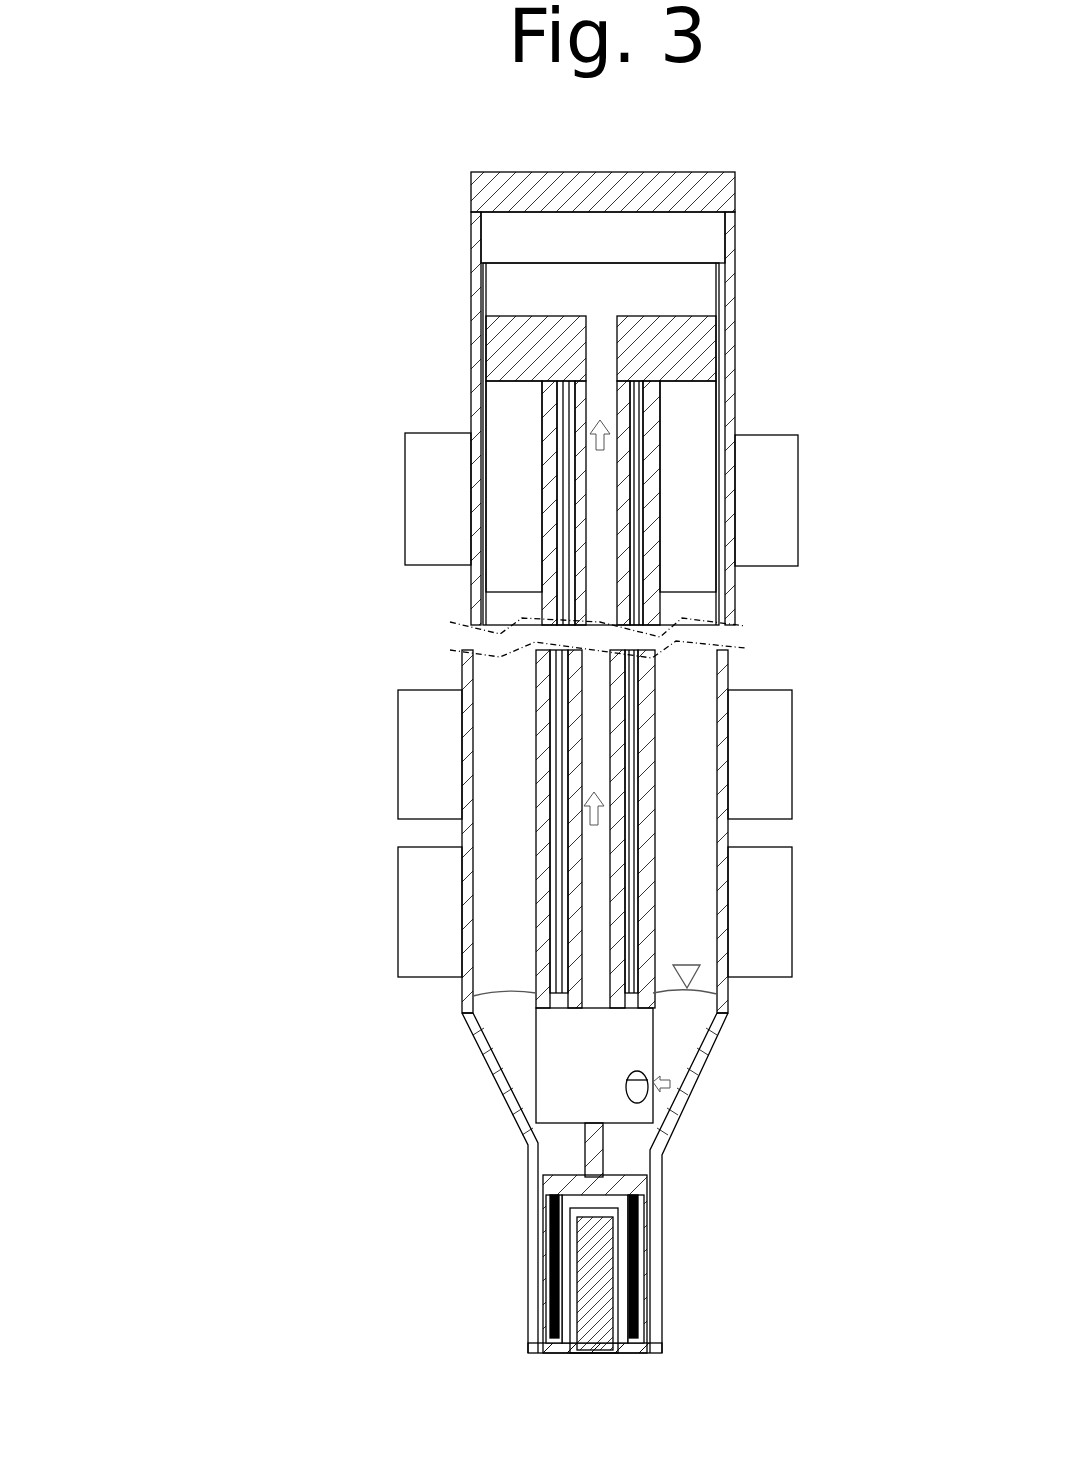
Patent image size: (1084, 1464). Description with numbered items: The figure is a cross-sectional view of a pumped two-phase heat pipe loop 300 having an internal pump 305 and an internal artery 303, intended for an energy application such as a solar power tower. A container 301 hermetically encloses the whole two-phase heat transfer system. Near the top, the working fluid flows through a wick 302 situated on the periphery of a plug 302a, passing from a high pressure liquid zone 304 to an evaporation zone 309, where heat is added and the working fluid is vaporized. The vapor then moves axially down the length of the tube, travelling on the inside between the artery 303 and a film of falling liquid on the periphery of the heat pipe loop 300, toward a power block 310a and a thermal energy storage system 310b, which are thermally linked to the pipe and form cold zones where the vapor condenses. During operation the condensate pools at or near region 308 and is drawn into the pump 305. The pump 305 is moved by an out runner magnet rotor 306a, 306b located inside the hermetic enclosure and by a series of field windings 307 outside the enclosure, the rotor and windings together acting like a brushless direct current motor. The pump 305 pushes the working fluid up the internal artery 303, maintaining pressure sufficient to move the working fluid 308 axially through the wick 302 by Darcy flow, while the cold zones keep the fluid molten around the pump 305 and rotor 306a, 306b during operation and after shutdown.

The pumped two-phase heat pipe loop 300 is at (170, 146).
The container 301 is at (687, 196).
The wick 302 is at (478, 402).
The plug 302a is at (506, 346).
The internal artery 303 is at (657, 437).
The high pressure liquid zone 304 is at (673, 243).
The internal pump 305 is at (556, 1071).
The out runner magnet rotor 306a is at (632, 1188).
The out runner magnet rotor 306b is at (548, 1214).
The field windings 307 is at (580, 1277).
The working fluid condensate pool 308 is at (682, 1023).
The evaporation zone 309 is at (772, 517).
The power block 310a is at (420, 755).
The thermal energy storage system 310b is at (424, 918).